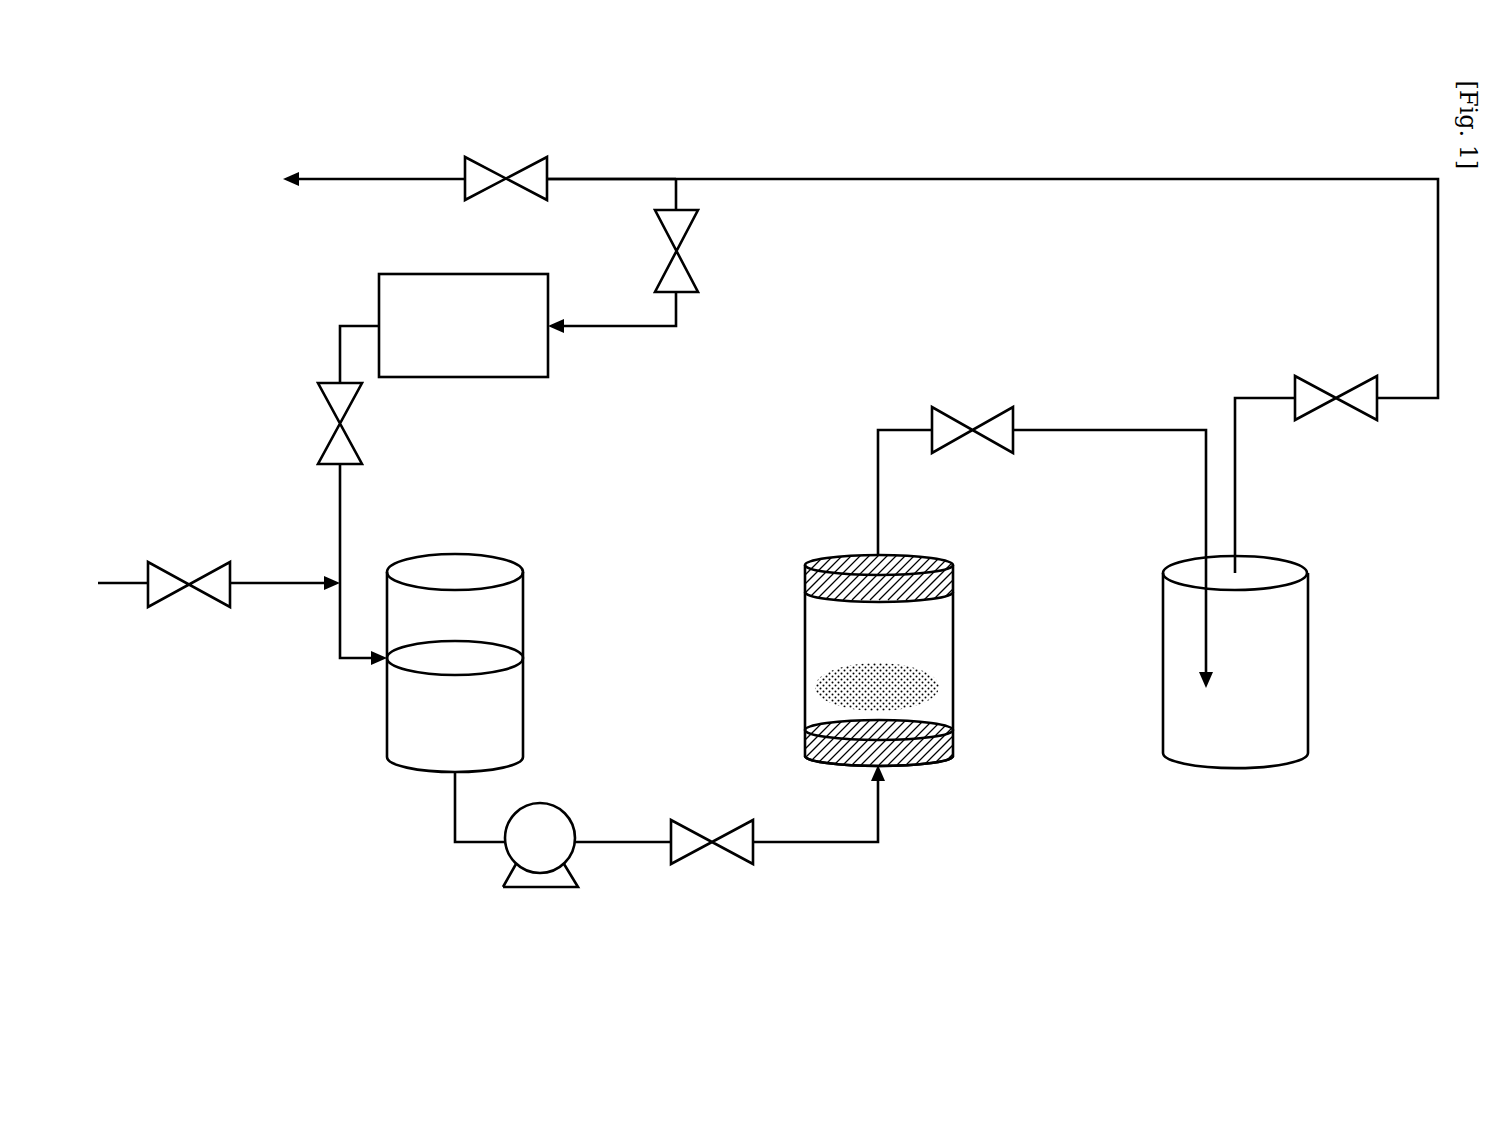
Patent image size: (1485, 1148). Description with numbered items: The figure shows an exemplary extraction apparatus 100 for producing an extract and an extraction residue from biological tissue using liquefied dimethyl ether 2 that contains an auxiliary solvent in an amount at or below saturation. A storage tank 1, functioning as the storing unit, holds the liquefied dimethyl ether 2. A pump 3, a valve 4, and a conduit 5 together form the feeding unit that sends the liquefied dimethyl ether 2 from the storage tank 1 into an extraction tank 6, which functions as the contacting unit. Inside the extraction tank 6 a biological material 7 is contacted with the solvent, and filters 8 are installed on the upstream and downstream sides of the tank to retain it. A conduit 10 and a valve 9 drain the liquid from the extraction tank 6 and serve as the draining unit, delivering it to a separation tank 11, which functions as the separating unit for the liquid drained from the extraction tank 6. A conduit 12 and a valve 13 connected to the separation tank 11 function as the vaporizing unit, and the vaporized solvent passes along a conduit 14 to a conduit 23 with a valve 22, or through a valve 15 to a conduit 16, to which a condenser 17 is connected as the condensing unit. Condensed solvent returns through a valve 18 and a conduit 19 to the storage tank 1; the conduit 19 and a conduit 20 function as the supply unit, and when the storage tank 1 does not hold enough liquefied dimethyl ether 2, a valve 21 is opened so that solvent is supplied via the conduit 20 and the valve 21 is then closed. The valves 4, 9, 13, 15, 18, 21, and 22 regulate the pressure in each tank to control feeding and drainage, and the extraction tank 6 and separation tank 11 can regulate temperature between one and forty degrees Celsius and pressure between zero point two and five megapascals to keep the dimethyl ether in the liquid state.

The extraction apparatus 100 is at (292, 420).
The storage tank 1 is at (523, 710).
The liquefied dimethyl ether 2 is at (407, 727).
The pump 3 is at (507, 875).
The valve 4 is at (672, 853).
The conduit 5 is at (823, 842).
The extraction tank 6 is at (860, 658).
The biological material 7 is at (927, 680).
The filters 8 is at (805, 578).
The valve 9 is at (990, 415).
The conduit 10 is at (1107, 430).
The separation tank 11 is at (1308, 710).
The conduit 12 is at (1267, 398).
The valve 13 is at (1350, 388).
The conduit 14 is at (858, 179).
The valve 15 is at (657, 230).
The conduit 16 is at (617, 326).
The condenser 17 is at (428, 274).
The valve 18 is at (357, 447).
The conduit 19 is at (343, 518).
The conduit 20 is at (273, 583).
The valve 21 is at (218, 578).
The valve 22 is at (516, 170).
The conduit 23 is at (622, 179).